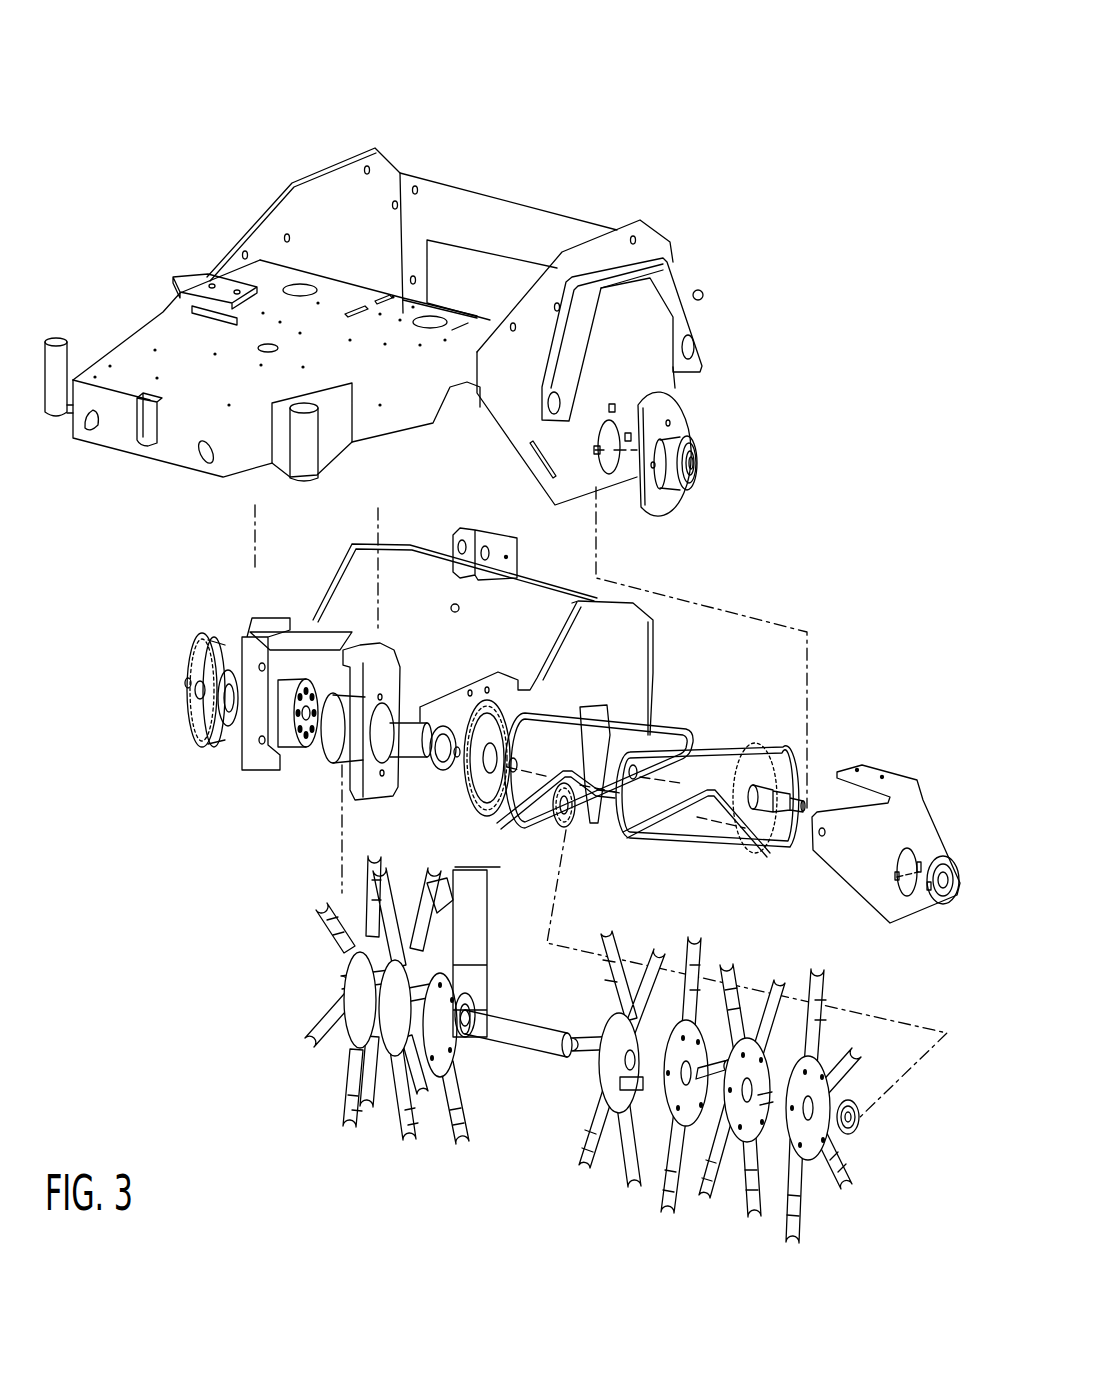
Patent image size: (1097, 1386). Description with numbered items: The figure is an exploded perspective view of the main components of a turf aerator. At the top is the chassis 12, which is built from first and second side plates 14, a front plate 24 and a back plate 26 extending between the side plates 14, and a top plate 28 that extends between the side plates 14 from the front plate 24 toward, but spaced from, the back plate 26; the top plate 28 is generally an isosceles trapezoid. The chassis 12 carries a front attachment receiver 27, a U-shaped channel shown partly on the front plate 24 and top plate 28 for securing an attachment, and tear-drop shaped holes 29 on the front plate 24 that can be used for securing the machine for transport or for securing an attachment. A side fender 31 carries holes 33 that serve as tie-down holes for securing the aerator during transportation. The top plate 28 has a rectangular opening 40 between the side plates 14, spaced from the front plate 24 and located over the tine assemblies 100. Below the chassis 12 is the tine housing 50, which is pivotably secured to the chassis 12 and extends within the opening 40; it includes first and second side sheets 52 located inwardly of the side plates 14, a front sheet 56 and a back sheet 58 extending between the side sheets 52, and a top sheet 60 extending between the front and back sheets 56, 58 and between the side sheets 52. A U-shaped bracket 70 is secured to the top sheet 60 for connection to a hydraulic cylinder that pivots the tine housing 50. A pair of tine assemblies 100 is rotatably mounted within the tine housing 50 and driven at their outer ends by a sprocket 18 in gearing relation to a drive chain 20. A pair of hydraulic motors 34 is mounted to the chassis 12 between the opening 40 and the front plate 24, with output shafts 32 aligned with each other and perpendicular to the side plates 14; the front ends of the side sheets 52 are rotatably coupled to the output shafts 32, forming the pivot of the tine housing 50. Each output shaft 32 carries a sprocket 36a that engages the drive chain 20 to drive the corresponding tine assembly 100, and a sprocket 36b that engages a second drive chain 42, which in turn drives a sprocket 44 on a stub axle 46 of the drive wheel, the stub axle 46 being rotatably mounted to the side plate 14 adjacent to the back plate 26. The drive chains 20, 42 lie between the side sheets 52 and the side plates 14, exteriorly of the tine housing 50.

The chassis 12 is at (146, 312).
The side plate 14 is at (338, 222).
The sprocket 18 is at (690, 732).
The drive chain 20 is at (720, 750).
The front plate 24 is at (108, 415).
The back plate 26 is at (527, 245).
The front attachment receiver 27 is at (150, 425).
The top plate 28 is at (185, 385).
The holes 29 is at (207, 463).
The side fender 31 is at (628, 273).
The output shaft 32 is at (390, 787).
The holes 33 is at (690, 347).
The hydraulic motor 34 is at (347, 740).
The sprocket 36a is at (203, 747).
The sprocket 36b is at (195, 705).
The rectangular opening 40 is at (352, 275).
The drive chain 42 is at (790, 757).
The sprocket 44 is at (750, 772).
The stub axle 46 is at (770, 855).
The tine housing 50 is at (643, 607).
The side sheet 52 is at (333, 583).
The front sheet 56 is at (411, 685).
The back sheet 58 is at (650, 668).
The top sheet 60 is at (538, 623).
The U-shaped bracket 70 is at (468, 526).
The tine assembly 100 is at (580, 1170).